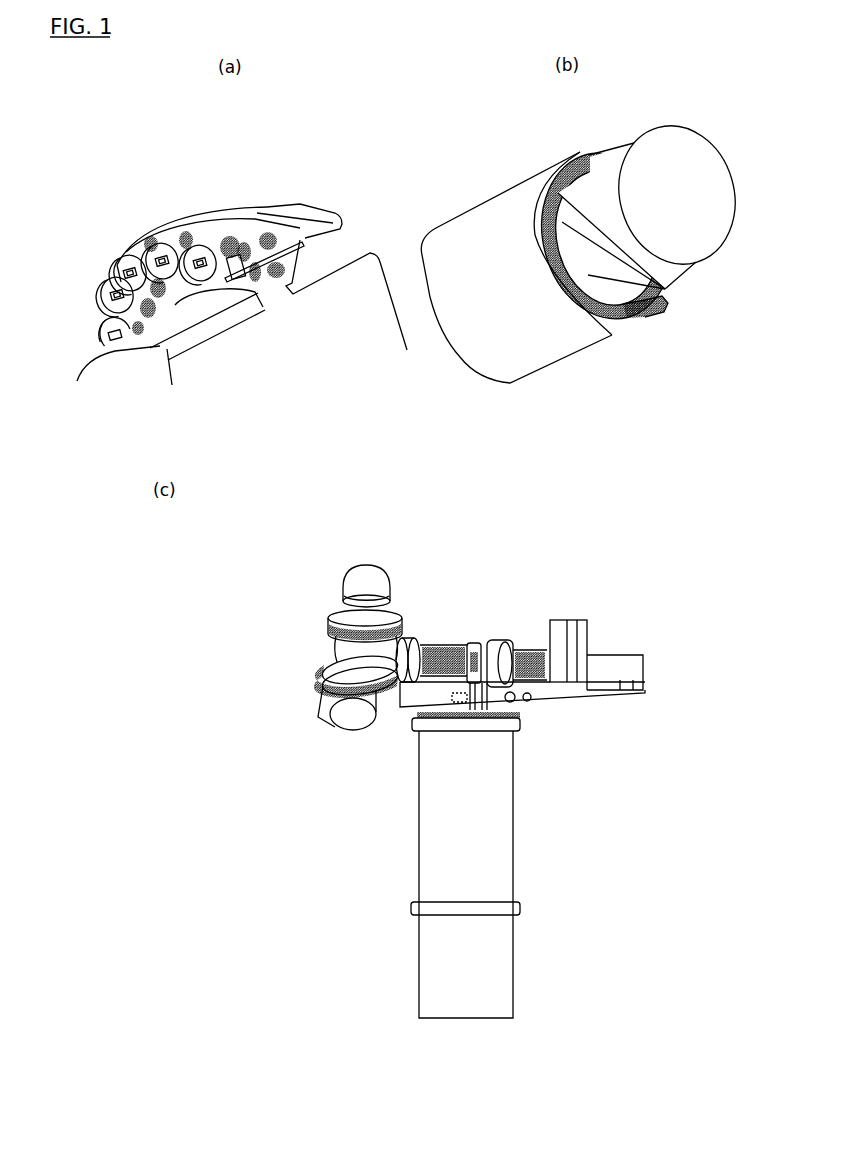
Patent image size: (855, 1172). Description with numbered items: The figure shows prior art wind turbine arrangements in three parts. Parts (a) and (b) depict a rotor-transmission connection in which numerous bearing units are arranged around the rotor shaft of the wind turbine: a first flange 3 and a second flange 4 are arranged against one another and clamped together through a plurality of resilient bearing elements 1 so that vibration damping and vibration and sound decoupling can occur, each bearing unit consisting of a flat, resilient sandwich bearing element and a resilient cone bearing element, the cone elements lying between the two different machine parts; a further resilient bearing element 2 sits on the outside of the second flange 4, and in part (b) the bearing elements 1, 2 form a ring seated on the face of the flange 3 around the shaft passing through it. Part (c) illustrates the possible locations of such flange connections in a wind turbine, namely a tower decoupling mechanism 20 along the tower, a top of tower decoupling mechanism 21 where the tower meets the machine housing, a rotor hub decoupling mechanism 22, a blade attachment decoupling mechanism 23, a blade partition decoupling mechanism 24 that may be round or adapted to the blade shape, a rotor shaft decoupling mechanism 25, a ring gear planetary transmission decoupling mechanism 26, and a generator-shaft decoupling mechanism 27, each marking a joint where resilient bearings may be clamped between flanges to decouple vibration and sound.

The resilient bearing element 1 is at (269, 233).
The resilient bearing element on outside of flange 2 is at (242, 263).
The first flange 3 is at (305, 208).
The second flange 4 is at (203, 216).
The tower decoupling mechanism 20 is at (522, 912).
The top of tower decoupling mechanism 21 is at (522, 728).
The rotor hub decoupling mechanism 22 is at (411, 636).
The blade attachment decoupling mechanism 23 is at (330, 628).
The blade partition decoupling mechanism 24 is at (366, 564).
The rotor shaft decoupling mechanism 25 is at (478, 650).
The ring gear planetary transmission decoupling mechanism 26 is at (502, 647).
The generator-shaft decoupling mechanism 27 is at (548, 660).